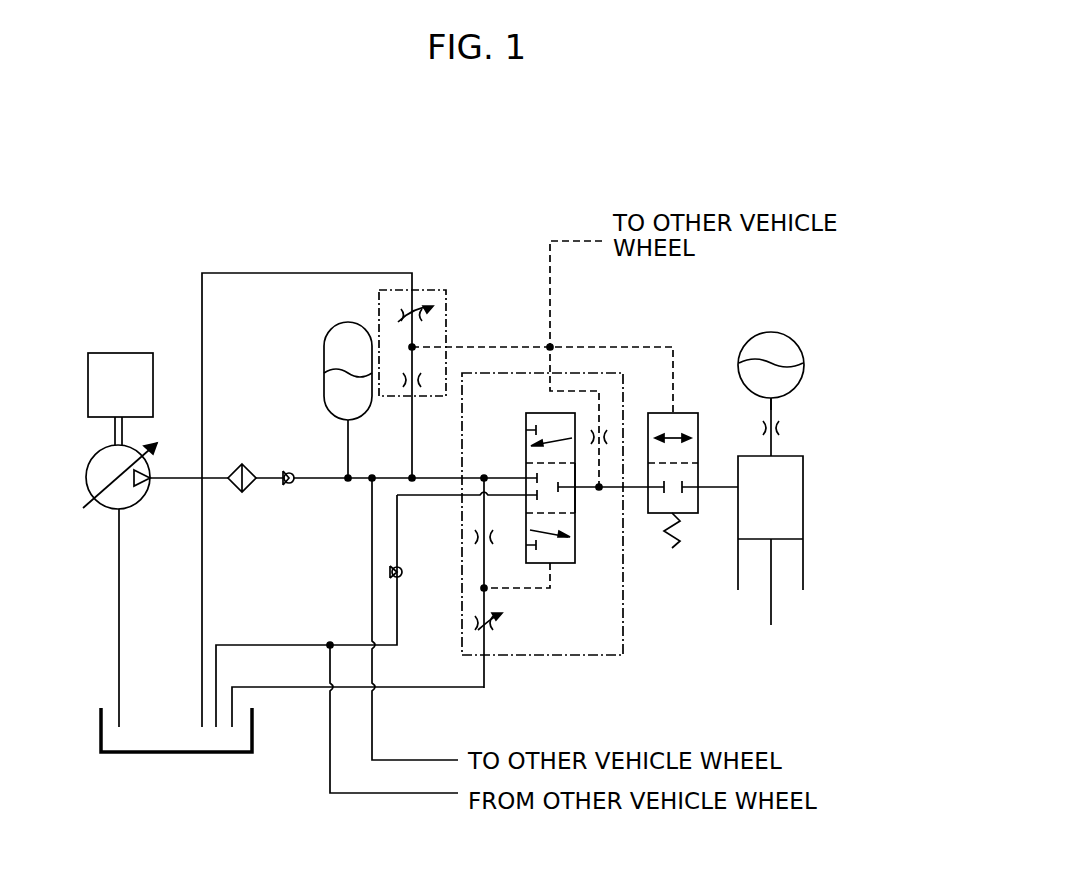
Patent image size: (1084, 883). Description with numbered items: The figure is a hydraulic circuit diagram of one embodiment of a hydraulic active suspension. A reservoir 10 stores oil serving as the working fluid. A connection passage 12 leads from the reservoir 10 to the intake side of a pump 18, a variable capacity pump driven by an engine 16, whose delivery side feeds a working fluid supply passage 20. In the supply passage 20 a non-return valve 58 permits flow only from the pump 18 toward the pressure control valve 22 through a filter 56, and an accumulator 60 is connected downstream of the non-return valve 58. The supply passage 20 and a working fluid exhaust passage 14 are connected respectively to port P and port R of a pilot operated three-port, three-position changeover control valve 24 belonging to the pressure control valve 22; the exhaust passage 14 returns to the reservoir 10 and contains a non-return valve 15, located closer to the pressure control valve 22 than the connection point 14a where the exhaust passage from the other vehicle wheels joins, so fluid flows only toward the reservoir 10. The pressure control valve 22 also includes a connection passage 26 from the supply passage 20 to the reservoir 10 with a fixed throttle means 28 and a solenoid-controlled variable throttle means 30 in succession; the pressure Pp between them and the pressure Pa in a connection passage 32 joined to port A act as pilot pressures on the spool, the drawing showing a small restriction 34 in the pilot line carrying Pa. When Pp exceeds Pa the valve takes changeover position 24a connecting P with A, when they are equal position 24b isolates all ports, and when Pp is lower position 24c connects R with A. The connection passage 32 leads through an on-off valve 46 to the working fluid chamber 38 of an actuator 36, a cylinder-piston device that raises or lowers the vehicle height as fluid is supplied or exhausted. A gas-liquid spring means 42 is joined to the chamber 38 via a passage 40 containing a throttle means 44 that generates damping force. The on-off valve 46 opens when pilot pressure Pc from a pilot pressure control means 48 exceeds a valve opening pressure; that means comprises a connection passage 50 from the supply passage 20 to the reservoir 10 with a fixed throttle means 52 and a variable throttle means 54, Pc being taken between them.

The reservoir 10 is at (178, 753).
The connection passage 12 is at (119, 625).
The working fluid exhaust passage 14 is at (275, 644).
The connection point 14a is at (330, 644).
The non-return valve 15 is at (403, 572).
The engine 16 is at (112, 352).
The pump 18 is at (104, 510).
The working fluid supply passage 20 is at (178, 481).
The pressure control valve 22 is at (623, 655).
The changeover control valve 24 is at (526, 414).
The changeover position 24a is at (560, 564).
The changeover position 24b is at (576, 500).
The changeover position 24c is at (536, 410).
The connection passage 26 is at (486, 672).
The fixed throttle means 28 is at (474, 537).
The variable throttle means 30 is at (474, 623).
The connection passage 32 is at (716, 487).
The orifice 34 is at (608, 437).
The actuator 36 is at (808, 476).
The working fluid chamber 38 is at (792, 528).
The passage 40 is at (776, 411).
The gas-liquid spring means 42 is at (771, 331).
The throttle means 44 is at (780, 428).
The on-off valve 46 is at (690, 514).
The pilot pressure control means 48 is at (428, 290).
The connection passage 50 is at (250, 272).
The fixed throttle means 52 is at (423, 385).
The variable throttle means 54 is at (398, 314).
The filter 56 is at (247, 494).
The non-return valve 58 is at (289, 470).
The accumulator 60 is at (324, 360).